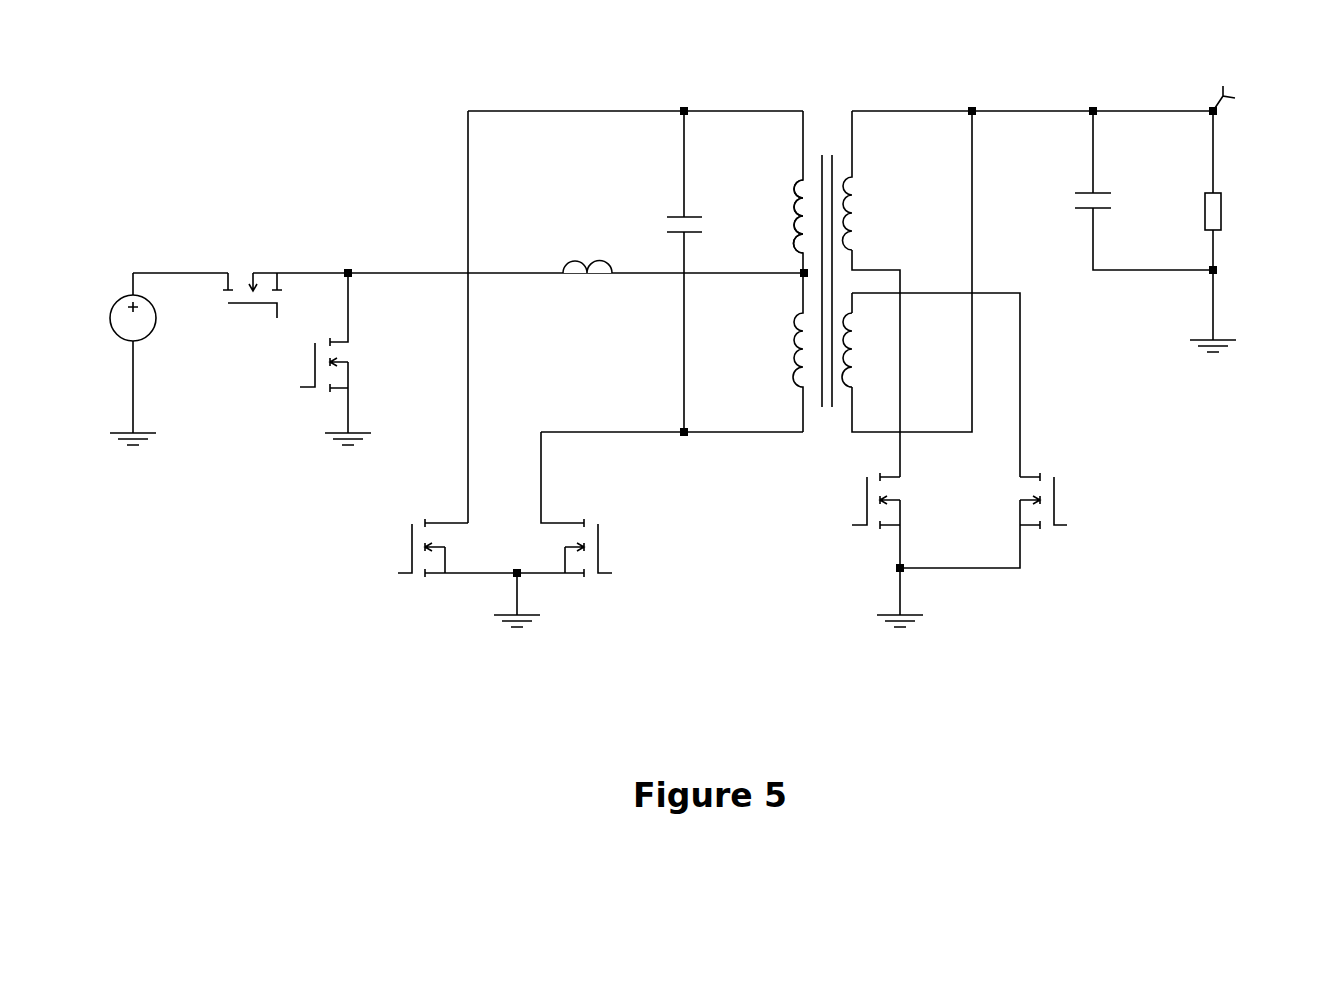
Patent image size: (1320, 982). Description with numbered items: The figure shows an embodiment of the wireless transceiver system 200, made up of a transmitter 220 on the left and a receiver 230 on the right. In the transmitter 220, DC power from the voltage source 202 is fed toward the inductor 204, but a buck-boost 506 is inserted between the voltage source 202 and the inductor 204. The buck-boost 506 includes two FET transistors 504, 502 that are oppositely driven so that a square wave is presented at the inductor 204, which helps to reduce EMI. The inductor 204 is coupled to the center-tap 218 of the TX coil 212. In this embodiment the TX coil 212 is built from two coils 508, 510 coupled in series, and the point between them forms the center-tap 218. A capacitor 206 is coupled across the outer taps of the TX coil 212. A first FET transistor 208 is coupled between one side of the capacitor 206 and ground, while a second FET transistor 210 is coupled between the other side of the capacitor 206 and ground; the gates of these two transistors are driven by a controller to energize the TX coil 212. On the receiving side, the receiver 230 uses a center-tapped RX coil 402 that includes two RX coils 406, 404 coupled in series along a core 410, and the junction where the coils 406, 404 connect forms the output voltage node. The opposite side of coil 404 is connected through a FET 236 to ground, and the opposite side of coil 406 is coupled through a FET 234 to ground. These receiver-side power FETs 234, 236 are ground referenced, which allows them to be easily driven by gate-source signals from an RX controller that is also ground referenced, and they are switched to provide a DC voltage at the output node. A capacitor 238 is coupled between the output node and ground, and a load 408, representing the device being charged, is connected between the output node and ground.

The transceiver system 200 is at (112, 130).
The transmitter 220 is at (350, 143).
The receiver 230 is at (1123, 357).
The voltage source 202 is at (110, 318).
The FET transistor 502 is at (230, 256).
The buck-boost 506 is at (262, 330).
The FET transistor 504 is at (377, 390).
The inductor 204 is at (580, 280).
The capacitor 206 is at (643, 220).
The TX coil 212 is at (763, 187).
The coil 508 is at (790, 203).
The center-tap 218 is at (798, 277).
The coil 510 is at (783, 360).
The core 410 is at (833, 155).
The coil 402 is at (838, 145).
The coil 406 is at (870, 193).
The coil 404 is at (852, 408).
The capacitor 238 is at (1073, 193).
The load 408 is at (1225, 227).
The first FET transistor 208 is at (398, 548).
The second FET transistor 210 is at (610, 550).
The FET 234 is at (847, 518).
The FET 236 is at (1045, 505).